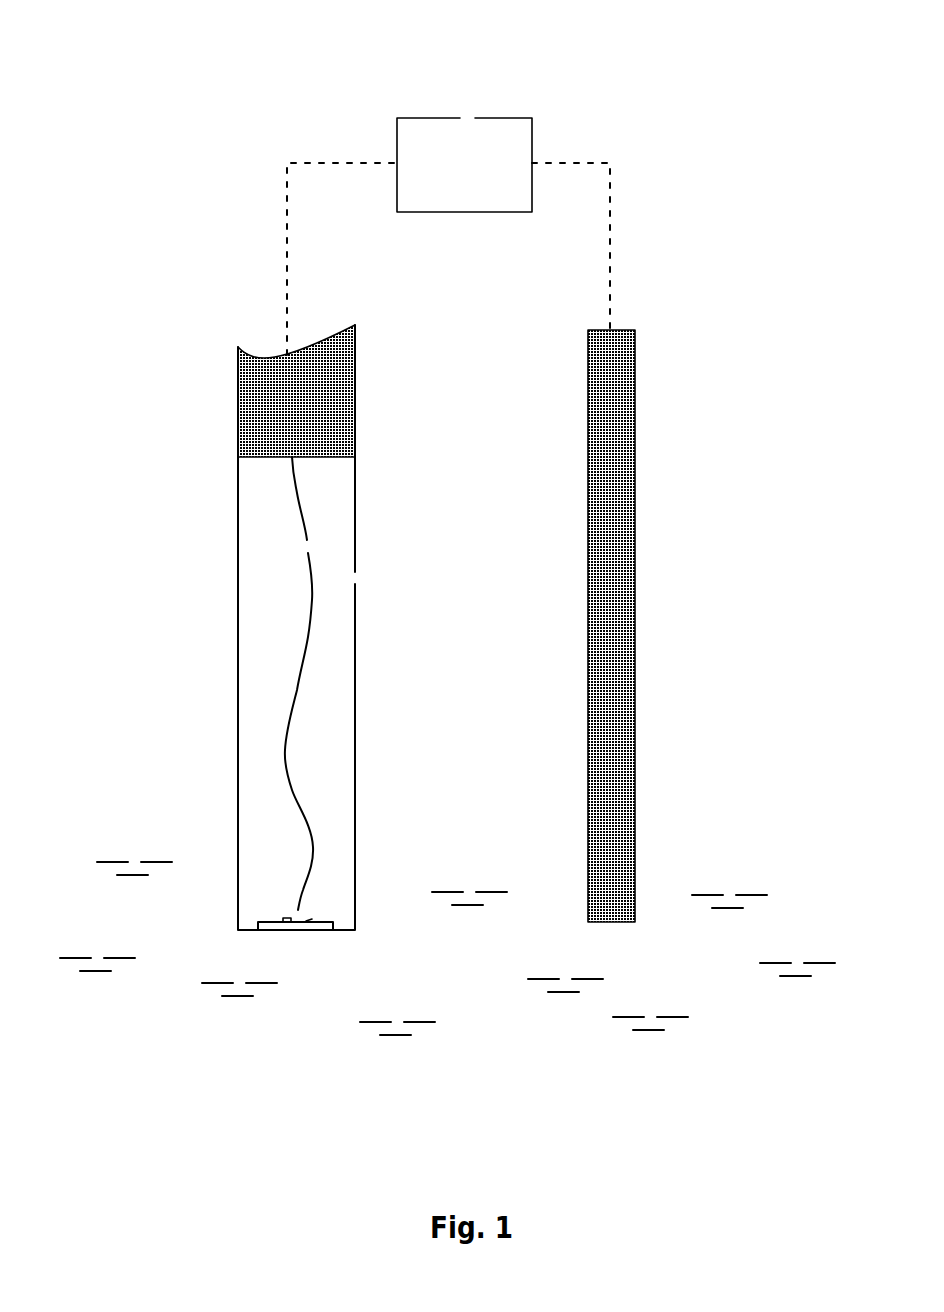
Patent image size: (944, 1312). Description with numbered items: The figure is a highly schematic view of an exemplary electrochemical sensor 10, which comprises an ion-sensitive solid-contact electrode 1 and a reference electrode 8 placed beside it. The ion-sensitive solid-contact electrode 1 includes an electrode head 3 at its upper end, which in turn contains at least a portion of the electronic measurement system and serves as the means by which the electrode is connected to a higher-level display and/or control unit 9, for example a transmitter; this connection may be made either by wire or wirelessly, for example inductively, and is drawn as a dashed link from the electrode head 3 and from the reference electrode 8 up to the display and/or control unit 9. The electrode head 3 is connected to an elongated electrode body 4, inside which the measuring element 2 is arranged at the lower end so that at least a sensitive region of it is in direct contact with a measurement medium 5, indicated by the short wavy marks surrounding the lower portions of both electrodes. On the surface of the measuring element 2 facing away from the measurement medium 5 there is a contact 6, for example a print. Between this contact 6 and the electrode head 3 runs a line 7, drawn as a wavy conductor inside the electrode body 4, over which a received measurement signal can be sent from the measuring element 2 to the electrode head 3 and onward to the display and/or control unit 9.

The electrochemical sensor 10 is at (185, 74).
The ion-sensitive solid-contact electrode 1 is at (165, 450).
The measuring element 2 is at (312, 927).
The electrode head 3 is at (334, 397).
The electrode body 4 is at (358, 580).
The measurement medium 5 is at (132, 946).
The contact 6 is at (295, 920).
The line 7 is at (308, 545).
The reference electrode 8 is at (607, 513).
The display and/or control unit 9 is at (465, 118).